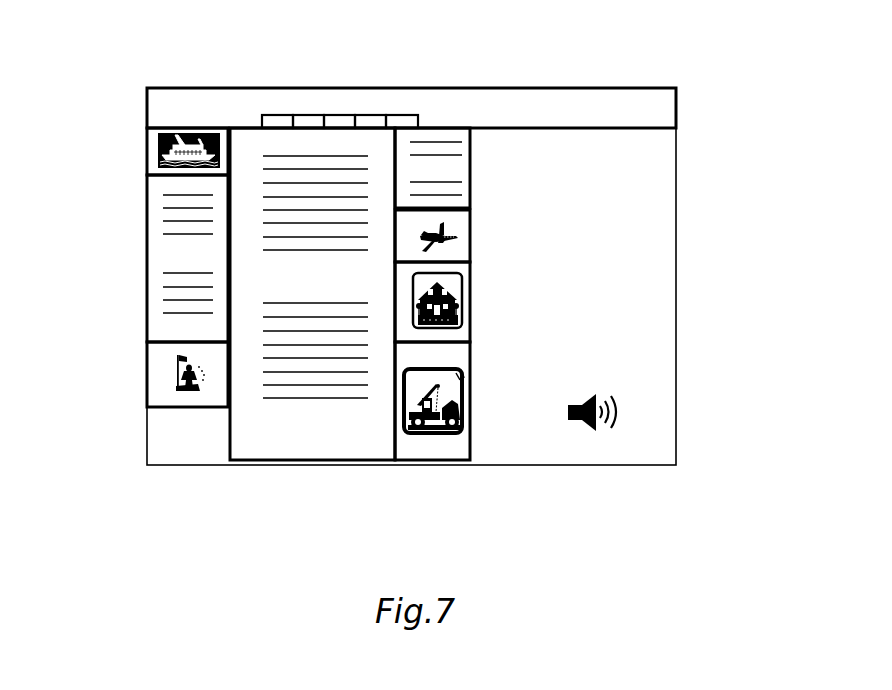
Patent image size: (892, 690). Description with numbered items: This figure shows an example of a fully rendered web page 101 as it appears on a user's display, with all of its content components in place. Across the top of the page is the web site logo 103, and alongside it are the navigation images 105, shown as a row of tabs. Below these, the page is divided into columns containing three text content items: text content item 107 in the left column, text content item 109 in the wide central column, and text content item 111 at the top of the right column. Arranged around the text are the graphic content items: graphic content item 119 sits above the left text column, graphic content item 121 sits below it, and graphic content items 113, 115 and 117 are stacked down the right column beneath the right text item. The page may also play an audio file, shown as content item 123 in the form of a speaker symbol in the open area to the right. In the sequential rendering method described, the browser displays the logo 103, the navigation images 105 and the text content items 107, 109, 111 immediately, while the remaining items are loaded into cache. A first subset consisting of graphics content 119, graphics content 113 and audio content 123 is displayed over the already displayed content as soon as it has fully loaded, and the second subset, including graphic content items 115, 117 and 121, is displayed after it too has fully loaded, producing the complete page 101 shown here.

The fully rendered web page 101 is at (676, 277).
The web site logo 103 is at (147, 112).
The navigation images 105 is at (343, 115).
The text content item 107 is at (147, 258).
The text content item 109 is at (310, 462).
The text content item 111 is at (470, 170).
The graphic content item 113 is at (470, 235).
The graphic content item 115 is at (473, 302).
The graphic content item 117 is at (473, 402).
The graphic content item 119 is at (147, 152).
The graphic content item 121 is at (147, 373).
The audio content item 123 is at (620, 412).